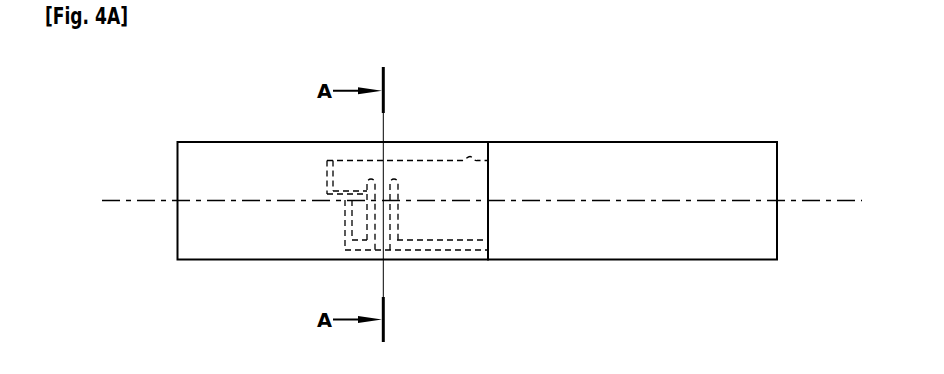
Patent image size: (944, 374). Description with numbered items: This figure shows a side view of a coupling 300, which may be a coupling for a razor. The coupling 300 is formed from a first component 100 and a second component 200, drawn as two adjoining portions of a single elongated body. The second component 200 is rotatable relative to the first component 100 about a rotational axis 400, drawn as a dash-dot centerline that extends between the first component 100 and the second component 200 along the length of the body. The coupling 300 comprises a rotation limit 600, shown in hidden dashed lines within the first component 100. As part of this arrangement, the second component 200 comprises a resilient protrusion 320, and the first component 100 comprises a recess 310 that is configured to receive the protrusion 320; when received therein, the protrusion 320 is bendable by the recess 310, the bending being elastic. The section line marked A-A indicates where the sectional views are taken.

The first component 100 is at (227, 157).
The second component 200 is at (677, 150).
The coupling 300 is at (483, 118).
The recess 310 is at (421, 249).
The resilient protrusion 320 is at (373, 245).
The rotational axis 400 is at (123, 202).
The rotation limit 600 is at (346, 207).